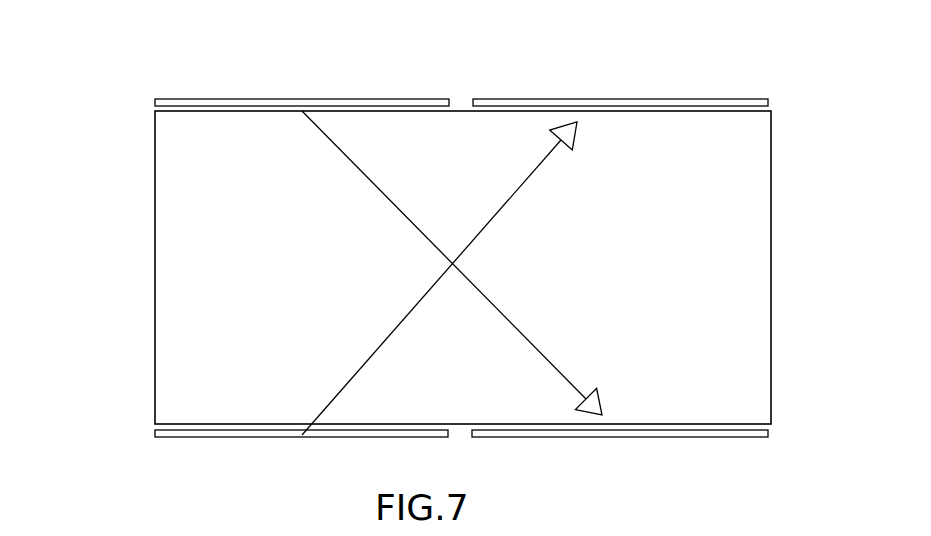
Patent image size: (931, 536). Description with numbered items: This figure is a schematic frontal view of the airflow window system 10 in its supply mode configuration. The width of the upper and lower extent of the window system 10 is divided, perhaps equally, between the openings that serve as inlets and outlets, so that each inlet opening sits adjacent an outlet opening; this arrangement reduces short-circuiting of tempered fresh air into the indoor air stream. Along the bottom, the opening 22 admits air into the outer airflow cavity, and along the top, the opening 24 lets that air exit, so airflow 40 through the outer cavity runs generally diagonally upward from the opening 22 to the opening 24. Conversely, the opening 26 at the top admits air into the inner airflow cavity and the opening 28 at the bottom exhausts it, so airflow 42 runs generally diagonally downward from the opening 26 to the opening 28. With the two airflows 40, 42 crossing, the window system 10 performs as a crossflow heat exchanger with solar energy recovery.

The window system 10 is at (115, 146).
The opening 22 is at (213, 437).
The opening 24 is at (738, 98).
The opening 26 is at (238, 98).
The opening 28 is at (704, 437).
The airflow 40 is at (391, 330).
The airflow 42 is at (376, 186).